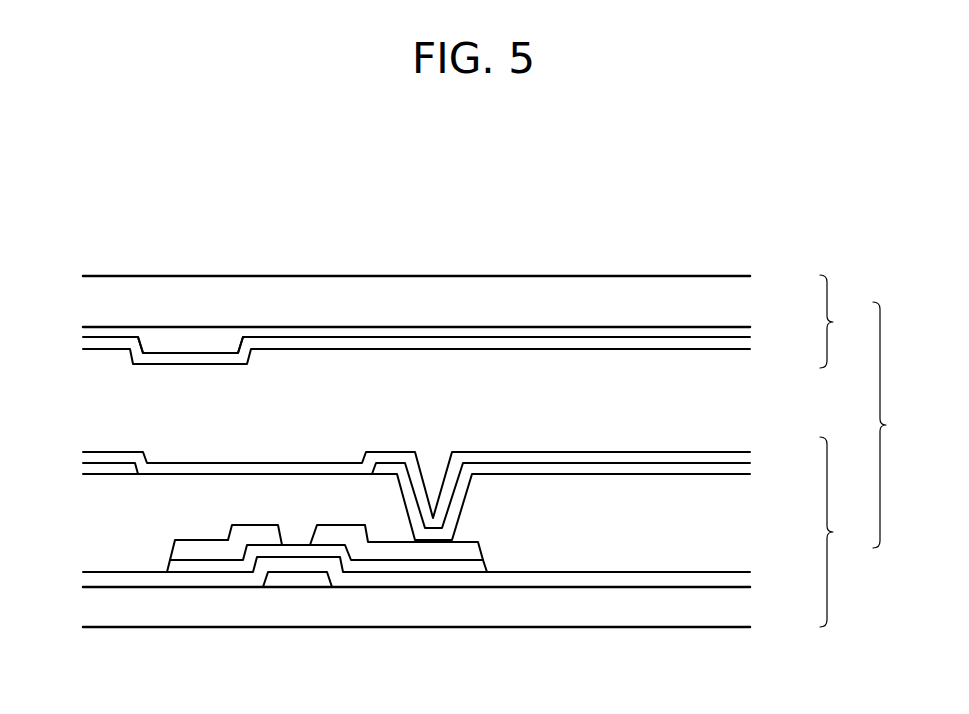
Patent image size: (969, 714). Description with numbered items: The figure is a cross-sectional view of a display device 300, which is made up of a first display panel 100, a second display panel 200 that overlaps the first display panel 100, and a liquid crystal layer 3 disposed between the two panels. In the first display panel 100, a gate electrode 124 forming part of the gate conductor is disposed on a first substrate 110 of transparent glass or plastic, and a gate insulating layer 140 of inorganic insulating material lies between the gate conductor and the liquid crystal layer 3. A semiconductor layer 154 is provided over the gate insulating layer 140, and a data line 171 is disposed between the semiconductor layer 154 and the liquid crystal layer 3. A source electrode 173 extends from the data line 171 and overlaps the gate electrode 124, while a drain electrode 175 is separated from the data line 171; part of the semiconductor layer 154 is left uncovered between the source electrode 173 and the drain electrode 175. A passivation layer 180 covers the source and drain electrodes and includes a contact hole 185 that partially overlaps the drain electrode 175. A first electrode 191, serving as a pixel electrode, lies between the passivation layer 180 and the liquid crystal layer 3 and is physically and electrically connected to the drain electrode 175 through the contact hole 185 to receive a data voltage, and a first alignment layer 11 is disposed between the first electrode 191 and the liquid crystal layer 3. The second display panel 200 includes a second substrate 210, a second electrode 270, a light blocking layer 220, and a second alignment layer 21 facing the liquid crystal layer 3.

The second substrate 210 is at (740, 303).
The second electrode 270 is at (752, 333).
The light blocking layer 220 is at (177, 345).
The second alignment layer 21 is at (752, 348).
The liquid crystal layer 3 is at (740, 402).
The first alignment layer 11 is at (740, 456).
The first electrode 191 is at (752, 469).
The passivation layer 180 is at (740, 529).
The contact hole 185 is at (431, 462).
The gate insulating layer 140 is at (740, 580).
The first substrate 110 is at (740, 604).
The gate electrode 124 is at (305, 580).
The semiconductor layer 154 is at (392, 568).
The data line 171 is at (198, 552).
The source electrode 173 is at (258, 535).
The drain electrode 175 is at (472, 553).
The second display panel 200 is at (845, 321).
The first display panel 100 is at (845, 532).
The display device 300 is at (899, 425).